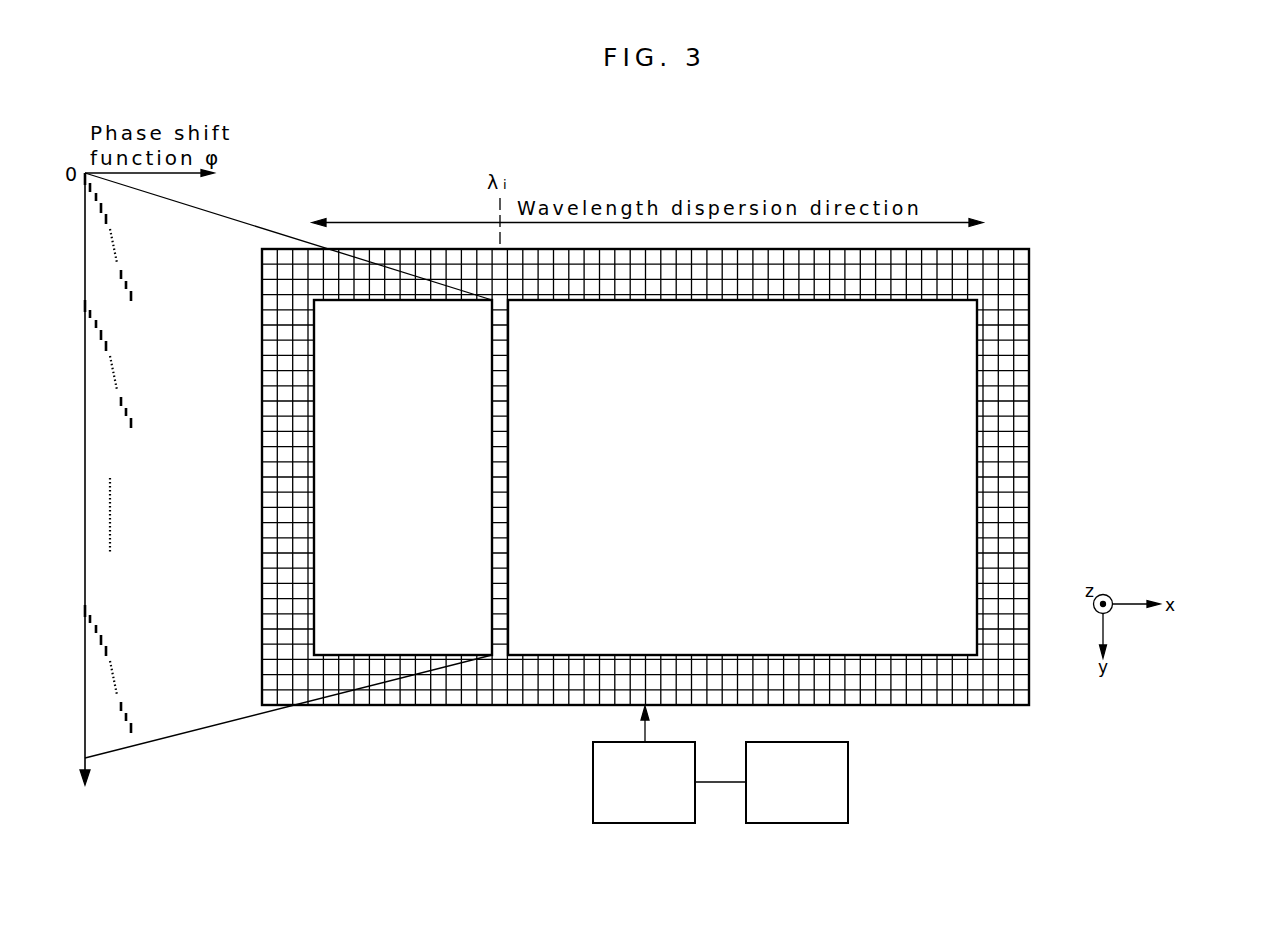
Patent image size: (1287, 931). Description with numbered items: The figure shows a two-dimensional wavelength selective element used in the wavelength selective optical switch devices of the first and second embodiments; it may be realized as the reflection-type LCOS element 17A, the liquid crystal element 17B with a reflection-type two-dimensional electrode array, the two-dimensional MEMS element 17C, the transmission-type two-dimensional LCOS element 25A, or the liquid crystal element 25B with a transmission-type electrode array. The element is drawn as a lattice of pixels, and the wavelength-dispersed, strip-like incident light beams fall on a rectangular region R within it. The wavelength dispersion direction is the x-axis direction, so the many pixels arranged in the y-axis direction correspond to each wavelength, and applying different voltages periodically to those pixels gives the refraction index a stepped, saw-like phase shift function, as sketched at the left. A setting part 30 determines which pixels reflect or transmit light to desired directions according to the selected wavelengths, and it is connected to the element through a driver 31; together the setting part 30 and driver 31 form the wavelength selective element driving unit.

The LCOS element 17A is at (757, 477).
The liquid crystal element 17B is at (757, 477).
The two-dimensional MEMS element 17C is at (757, 477).
The transmission-type two-dimensional LCOS element 25A is at (757, 477).
The liquid crystal element 25B is at (1029, 300).
The rectangular region R is at (972, 453).
The driver 31 is at (593, 758).
The setting part 30 is at (848, 757).